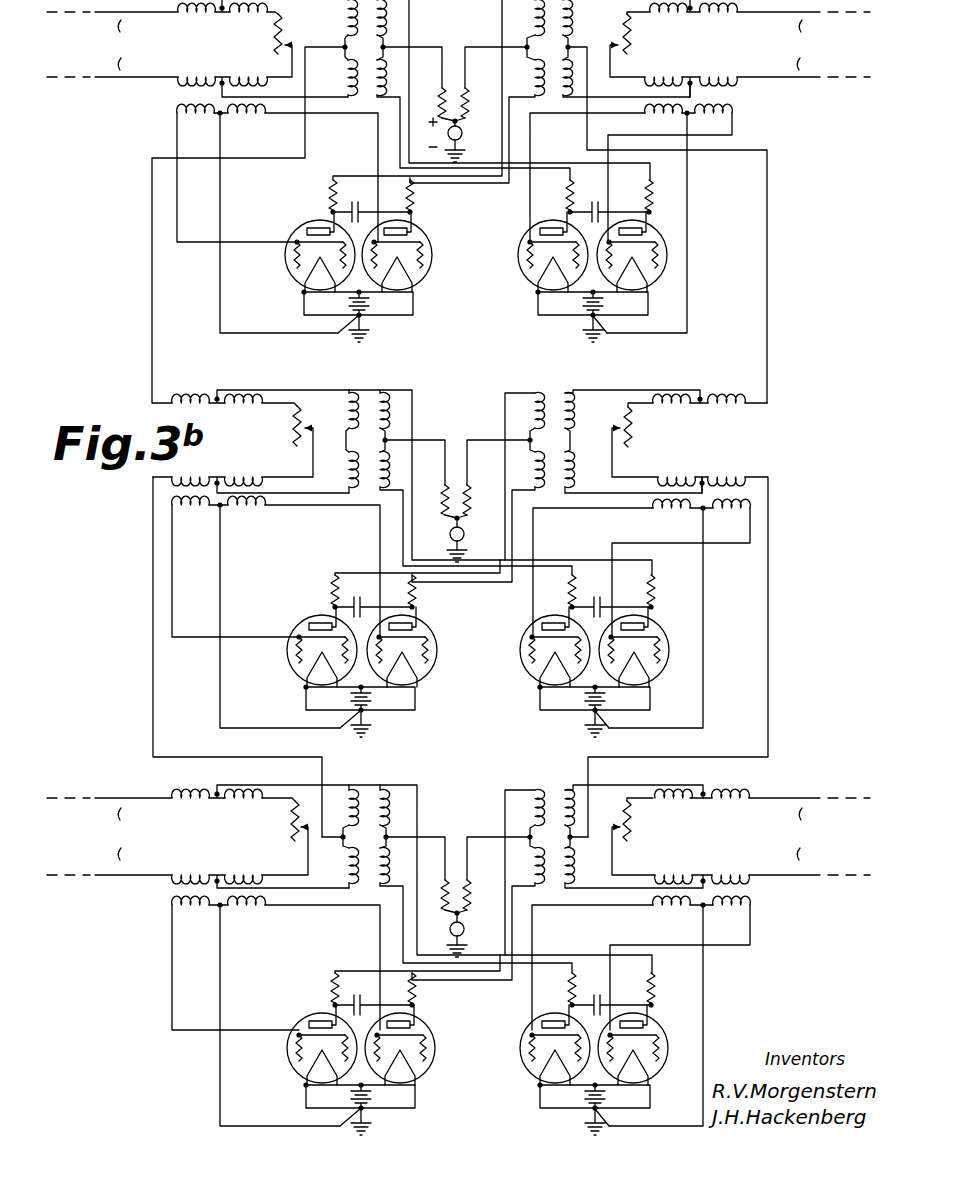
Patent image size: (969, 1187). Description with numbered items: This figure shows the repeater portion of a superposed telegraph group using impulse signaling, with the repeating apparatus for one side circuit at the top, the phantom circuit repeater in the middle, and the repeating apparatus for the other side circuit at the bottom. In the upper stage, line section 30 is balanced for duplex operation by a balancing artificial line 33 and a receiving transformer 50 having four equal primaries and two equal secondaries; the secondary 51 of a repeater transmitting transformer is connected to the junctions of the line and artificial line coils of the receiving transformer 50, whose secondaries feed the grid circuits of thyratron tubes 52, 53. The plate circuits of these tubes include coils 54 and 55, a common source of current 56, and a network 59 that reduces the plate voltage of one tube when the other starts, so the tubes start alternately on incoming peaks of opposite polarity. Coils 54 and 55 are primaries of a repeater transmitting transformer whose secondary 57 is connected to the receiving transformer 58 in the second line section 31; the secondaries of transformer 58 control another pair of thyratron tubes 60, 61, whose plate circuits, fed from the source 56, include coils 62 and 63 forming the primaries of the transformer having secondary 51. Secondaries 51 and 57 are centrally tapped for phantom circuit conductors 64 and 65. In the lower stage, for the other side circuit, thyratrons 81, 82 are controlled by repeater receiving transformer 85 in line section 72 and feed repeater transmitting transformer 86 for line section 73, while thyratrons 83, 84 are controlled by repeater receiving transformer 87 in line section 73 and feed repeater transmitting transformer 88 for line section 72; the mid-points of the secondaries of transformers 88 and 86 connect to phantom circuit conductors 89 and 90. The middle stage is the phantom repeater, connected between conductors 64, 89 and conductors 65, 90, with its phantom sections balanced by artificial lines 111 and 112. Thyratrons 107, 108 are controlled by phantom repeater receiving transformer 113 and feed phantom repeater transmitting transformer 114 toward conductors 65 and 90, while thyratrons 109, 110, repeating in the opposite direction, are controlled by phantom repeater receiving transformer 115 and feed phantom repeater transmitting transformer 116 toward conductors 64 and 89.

The line section 30 is at (112, 44).
The second line section 31 is at (828, 44).
The balancing artificial line 33 is at (303, 22).
The receiving transformer 50 is at (263, 48).
The secondary of repeater transmitting transformer 51 is at (345, 45).
The thyratron tube 52 is at (292, 272).
The thyratron tube 53 is at (428, 275).
The coil 54 is at (505, 44).
The coil 55 is at (477, 121).
The common source of current 56 is at (462, 133).
The secondary of repeater transmitting transformer 57 is at (567, 65).
The receiving transformer 58 is at (715, 48).
The network 59 is at (396, 191).
The thyratron tube 60 is at (521, 276).
The thyratron tube 61 is at (652, 280).
The coil 62 is at (380, 75).
The coil 63 is at (380, 22).
The phantom circuit conductor 64 is at (152, 305).
The phantom circuit conductor 65 is at (767, 292).
The line section 72 is at (109, 836).
The line section 73 is at (826, 836).
The thyratron 81 is at (290, 1078).
The thyratron 82 is at (425, 1076).
The thyratron 83 is at (525, 1076).
The thyratron 84 is at (652, 1078).
The repeater receiving transformer 85 is at (412, 879).
The repeater transmitting transformer 86 is at (557, 871).
The repeater receiving transformer 87 is at (716, 836).
The repeater transmitting transformer 88 is at (447, 868).
The phantom circuit conductor 89 is at (153, 678).
The phantom circuit conductor 90 is at (768, 730).
The thyratron 107 is at (292, 683).
The thyratron 108 is at (412, 684).
The thyratron 109 is at (524, 693).
The thyratron 110 is at (652, 686).
The artificial line 111 is at (287, 440).
The artificial line 112 is at (630, 427).
The phantom repeater receiving transformer 113 is at (220, 478).
The phantom repeater transmitting transformer 114 is at (557, 475).
The phantom repeater receiving transformer 115 is at (710, 443).
The phantom repeater transmitting transformer 116 is at (459, 471).